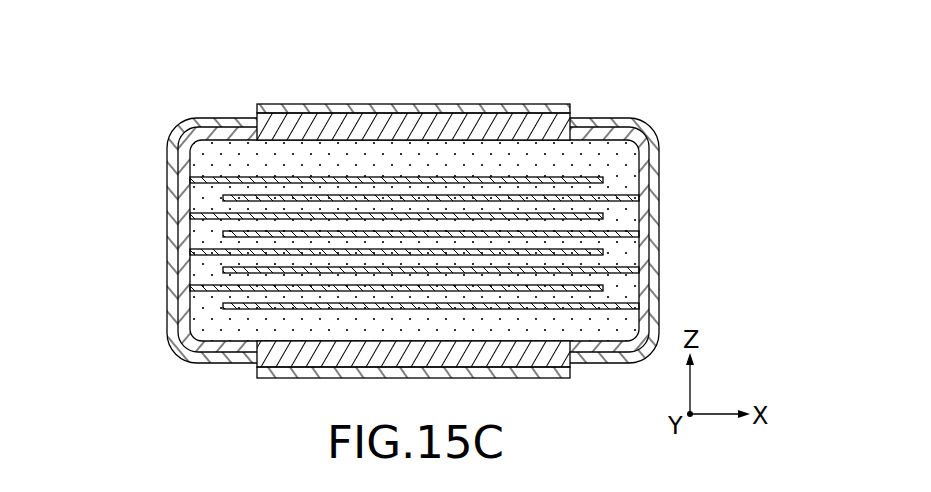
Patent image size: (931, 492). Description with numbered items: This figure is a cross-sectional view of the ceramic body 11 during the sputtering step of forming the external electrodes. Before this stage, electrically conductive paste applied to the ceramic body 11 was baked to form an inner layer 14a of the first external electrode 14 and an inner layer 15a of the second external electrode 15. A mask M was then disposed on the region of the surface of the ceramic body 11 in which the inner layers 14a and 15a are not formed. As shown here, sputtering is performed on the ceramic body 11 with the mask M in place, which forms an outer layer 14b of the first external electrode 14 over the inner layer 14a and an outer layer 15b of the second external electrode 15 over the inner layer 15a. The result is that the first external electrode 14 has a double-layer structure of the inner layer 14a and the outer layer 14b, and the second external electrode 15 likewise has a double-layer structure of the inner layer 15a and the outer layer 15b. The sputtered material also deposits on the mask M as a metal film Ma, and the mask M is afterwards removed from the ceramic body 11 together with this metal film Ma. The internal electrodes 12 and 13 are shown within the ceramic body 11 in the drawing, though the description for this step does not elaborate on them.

The ceramic body 11 is at (415, 193).
The first internal electrodes 12 is at (189, 283).
The second internal electrodes 13 is at (641, 304).
The first external electrode 14 is at (339, 240).
The inner layer 14a is at (183, 306).
The outer layer 14b is at (178, 347).
The second external electrode 15 is at (612, 239).
The inner layer 15a is at (645, 167).
The outer layer 15b is at (647, 131).
The mask M is at (379, 130).
The metal film Ma is at (532, 112).